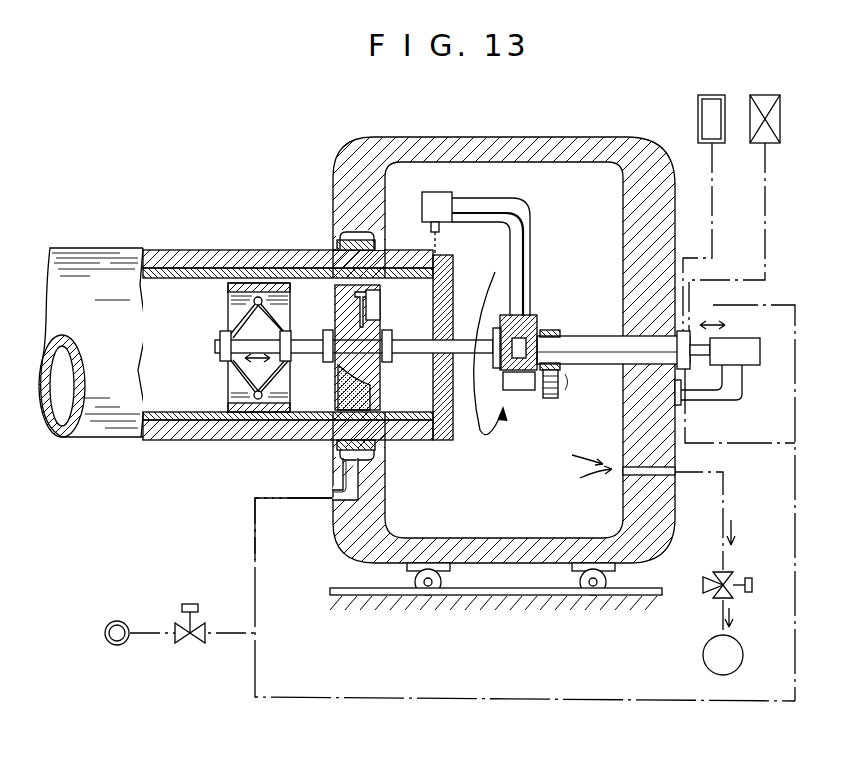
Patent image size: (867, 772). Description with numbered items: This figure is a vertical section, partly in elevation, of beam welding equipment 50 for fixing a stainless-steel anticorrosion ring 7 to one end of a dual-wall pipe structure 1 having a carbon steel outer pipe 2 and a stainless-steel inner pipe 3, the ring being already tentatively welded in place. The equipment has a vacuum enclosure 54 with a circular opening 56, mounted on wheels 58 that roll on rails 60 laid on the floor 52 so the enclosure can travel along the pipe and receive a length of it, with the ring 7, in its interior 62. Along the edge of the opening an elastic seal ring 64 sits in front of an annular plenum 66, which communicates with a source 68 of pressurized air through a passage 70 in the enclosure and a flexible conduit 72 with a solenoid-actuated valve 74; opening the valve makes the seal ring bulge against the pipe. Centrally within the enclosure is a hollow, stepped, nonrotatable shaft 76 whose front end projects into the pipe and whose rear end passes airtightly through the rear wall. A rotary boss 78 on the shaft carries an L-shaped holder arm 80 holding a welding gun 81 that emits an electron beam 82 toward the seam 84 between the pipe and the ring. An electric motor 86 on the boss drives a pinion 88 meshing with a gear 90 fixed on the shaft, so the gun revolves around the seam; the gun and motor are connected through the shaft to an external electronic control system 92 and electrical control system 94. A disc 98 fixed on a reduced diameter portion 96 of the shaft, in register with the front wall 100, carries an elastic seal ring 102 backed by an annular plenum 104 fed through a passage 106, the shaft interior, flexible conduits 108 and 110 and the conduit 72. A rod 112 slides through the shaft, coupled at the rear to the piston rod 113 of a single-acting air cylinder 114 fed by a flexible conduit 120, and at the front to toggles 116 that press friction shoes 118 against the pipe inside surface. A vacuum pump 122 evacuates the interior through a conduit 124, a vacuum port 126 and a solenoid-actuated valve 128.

The dual-wall pipe structure 1 is at (107, 243).
The carbon steel outer pipe 2 is at (195, 250).
The stainless-steel inner pipe 3 is at (146, 275).
The anticorrosion ring 7 is at (455, 432).
The beam welding equipment 50 is at (292, 205).
The floor 52 is at (342, 588).
The vacuum enclosure 54 is at (618, 150).
The circular opening 56 is at (338, 446).
The wheels 58 is at (430, 596).
The rails 60 is at (526, 598).
The interior 62 is at (572, 245).
The elastic seal ring 64 is at (338, 243).
The annular plenum 66 is at (376, 237).
The source of air under pressure 68 is at (117, 645).
The passage 70 is at (345, 500).
The flexible conduit 72 is at (248, 556).
The solenoid-actuated valve 74 is at (190, 645).
The shaft 76 is at (600, 352).
The rotary boss 78 is at (531, 315).
The L-shaped holder arm 80 is at (523, 218).
The welding gun 81 is at (450, 200).
The electron beam 82 is at (445, 240).
The seam 84 is at (455, 270).
The electric motor 86 is at (520, 391).
The pinion 88 is at (552, 392).
The gear 90 is at (556, 331).
The electronic control system 92 is at (765, 95).
The electrical control system 94 is at (712, 95).
The reduced diameter portion 96 is at (348, 333).
The disc 98 is at (381, 292).
The front wall 100 is at (375, 206).
The elastic seal ring 102 is at (372, 397).
The annular plenum 104 is at (345, 294).
The passage 106 is at (376, 313).
The flexible conduit 108 is at (736, 445).
The flexible conduit 110 is at (473, 700).
The rod 112 is at (228, 356).
The piston rod 113 is at (705, 395).
The single-acting air cylinder 114 is at (745, 346).
The toggles 116 is at (232, 314).
The friction shoes 118 is at (228, 288).
The flexible conduit 120 is at (800, 358).
The vacuum pump 122 is at (703, 665).
The conduit 124 is at (732, 492).
The vacuum port 126 is at (624, 472).
The solenoid-actuated valve 128 is at (753, 592).